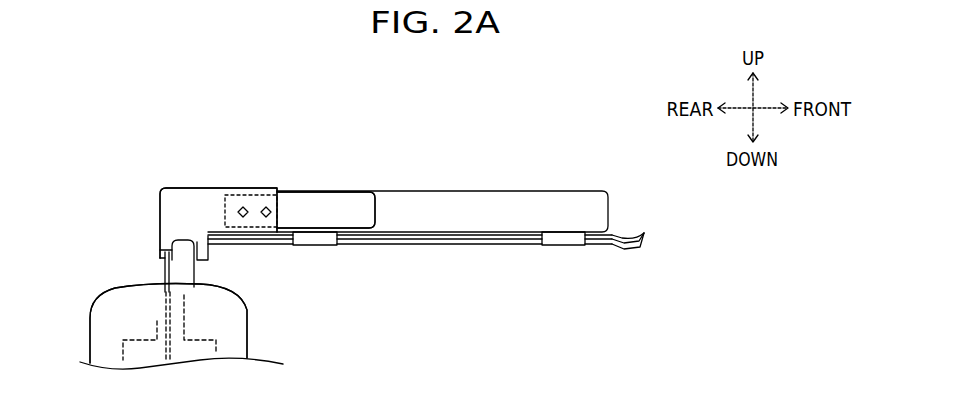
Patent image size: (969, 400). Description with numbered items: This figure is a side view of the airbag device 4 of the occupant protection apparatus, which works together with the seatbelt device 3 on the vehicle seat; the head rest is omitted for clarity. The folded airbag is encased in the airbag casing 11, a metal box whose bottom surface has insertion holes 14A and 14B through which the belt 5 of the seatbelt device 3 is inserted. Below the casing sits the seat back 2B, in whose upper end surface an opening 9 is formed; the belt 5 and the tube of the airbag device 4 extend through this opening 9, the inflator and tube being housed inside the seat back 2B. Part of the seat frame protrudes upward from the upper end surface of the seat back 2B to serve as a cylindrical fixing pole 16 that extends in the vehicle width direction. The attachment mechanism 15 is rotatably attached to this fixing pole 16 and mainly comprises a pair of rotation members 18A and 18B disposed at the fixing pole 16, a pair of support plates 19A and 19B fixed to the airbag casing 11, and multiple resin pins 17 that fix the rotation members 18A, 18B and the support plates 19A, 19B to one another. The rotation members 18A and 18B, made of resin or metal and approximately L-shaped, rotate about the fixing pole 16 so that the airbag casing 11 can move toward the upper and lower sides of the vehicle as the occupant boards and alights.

The seat back 2B is at (105, 290).
The seatbelt device 3 is at (641, 299).
The airbag device 4 is at (432, 128).
The belt 5 is at (606, 254).
The opening 9 is at (157, 321).
The airbag casing 11 is at (458, 195).
The insertion hole 14A is at (568, 247).
The insertion hole 14B is at (315, 247).
The attachment mechanism 15 is at (257, 115).
The fixing pole 16 is at (163, 258).
The resin pins 17 is at (243, 207).
The rotation member 18A is at (178, 200).
The rotation member 18B is at (218, 223).
The support plate 19A is at (347, 205).
The support plate 19B is at (326, 210).